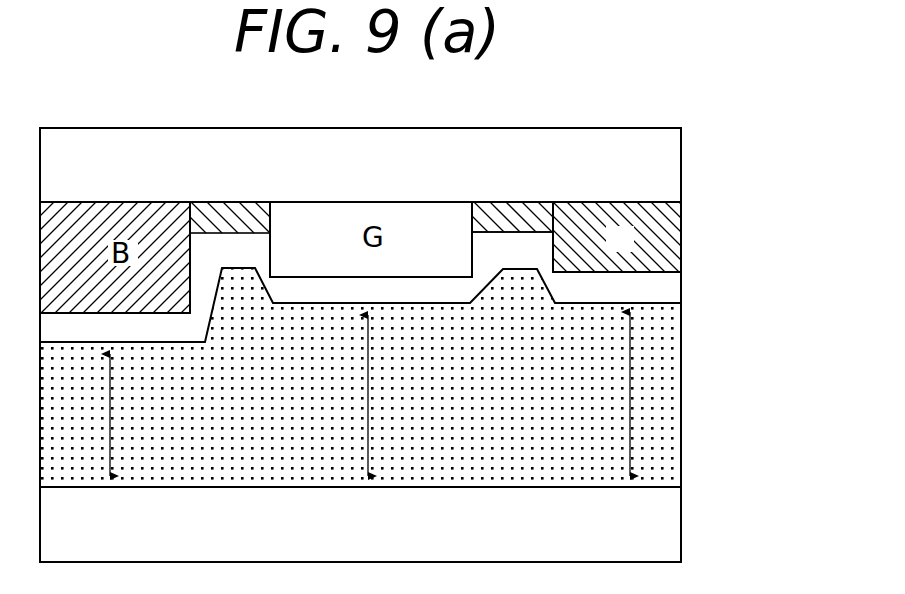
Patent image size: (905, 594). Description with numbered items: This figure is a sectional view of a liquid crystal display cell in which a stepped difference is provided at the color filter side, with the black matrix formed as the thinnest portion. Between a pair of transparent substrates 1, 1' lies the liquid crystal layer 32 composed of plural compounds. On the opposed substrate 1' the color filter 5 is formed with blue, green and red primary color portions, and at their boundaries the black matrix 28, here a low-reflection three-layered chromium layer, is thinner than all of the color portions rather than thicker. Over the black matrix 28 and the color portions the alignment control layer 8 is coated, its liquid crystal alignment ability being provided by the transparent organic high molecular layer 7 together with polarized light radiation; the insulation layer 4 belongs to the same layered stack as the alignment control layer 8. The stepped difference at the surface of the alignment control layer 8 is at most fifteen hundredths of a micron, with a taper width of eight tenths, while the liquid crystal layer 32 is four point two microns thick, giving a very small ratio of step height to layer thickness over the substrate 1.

The opposed transparent substrate 1' is at (397, 157).
The black matrix 28 is at (497, 221).
The insulation layer 4 is at (522, 246).
The alignment control layer 8 is at (633, 184).
The transparent organic high molecular layer 7 is at (677, 288).
The color filter 5 is at (681, 240).
The liquid crystal layer 32 is at (672, 390).
The transparent substrate 1 is at (397, 525).